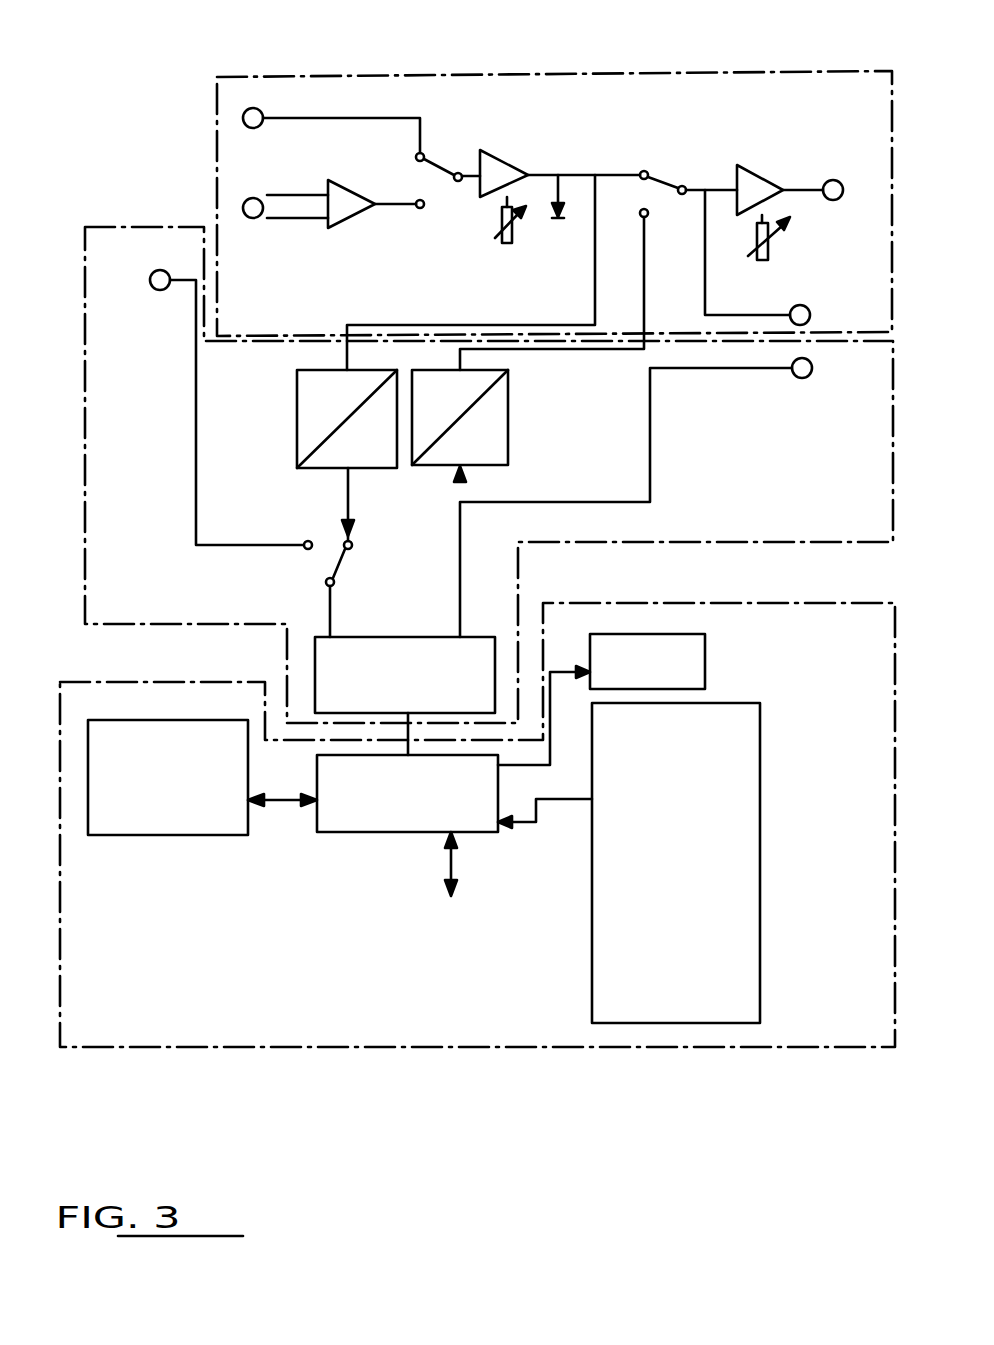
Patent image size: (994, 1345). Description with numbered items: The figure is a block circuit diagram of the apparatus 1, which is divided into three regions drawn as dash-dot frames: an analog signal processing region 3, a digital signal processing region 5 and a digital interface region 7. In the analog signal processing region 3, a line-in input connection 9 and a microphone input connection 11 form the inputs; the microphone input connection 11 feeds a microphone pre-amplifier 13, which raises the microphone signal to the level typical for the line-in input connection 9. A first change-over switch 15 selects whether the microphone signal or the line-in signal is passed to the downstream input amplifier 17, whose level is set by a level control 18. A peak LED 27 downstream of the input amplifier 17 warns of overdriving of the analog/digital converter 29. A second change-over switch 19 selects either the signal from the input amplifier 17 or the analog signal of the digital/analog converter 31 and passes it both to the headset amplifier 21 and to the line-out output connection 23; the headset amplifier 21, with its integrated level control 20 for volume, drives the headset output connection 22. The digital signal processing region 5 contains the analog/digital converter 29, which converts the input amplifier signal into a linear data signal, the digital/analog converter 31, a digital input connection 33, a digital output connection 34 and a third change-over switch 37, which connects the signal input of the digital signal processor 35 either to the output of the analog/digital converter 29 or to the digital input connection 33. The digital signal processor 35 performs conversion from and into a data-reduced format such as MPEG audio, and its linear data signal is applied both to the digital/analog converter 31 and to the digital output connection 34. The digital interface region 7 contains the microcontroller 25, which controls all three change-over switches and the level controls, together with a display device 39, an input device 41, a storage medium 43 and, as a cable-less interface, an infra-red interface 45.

The apparatus 1 is at (172, 156).
The analog signal processing region 3 is at (532, 72).
The digital signal processing region 5 is at (852, 542).
The digital interface region 7 is at (397, 1047).
The line-in input connection 9 is at (260, 126).
The microphone input connection 11 is at (259, 218).
The microphone pre-amplifier 13 is at (353, 212).
The first change-over switch 15 is at (440, 160).
The input amplifier 17 is at (500, 167).
The level control 18 is at (495, 222).
The second change-over switch 19 is at (668, 178).
The level control 20 is at (752, 237).
The headset amplifier 21 is at (758, 185).
The headset output connection 22 is at (838, 199).
The line-out output connection 23 is at (810, 312).
The microcontroller 25 is at (407, 793).
The peak LED 27 is at (557, 223).
The analog/digital converter 29 is at (347, 419).
The digital/analog converter 31 is at (460, 417).
The digital input connection 33 is at (152, 293).
The digital output connection 34 is at (810, 377).
The digital signal processor 35 is at (405, 675).
The third change-over switch 37 is at (337, 576).
The display device 39 is at (647, 661).
The input device 41 is at (676, 863).
The storage medium 43 is at (168, 777).
The infra-red interface 45 is at (447, 866).